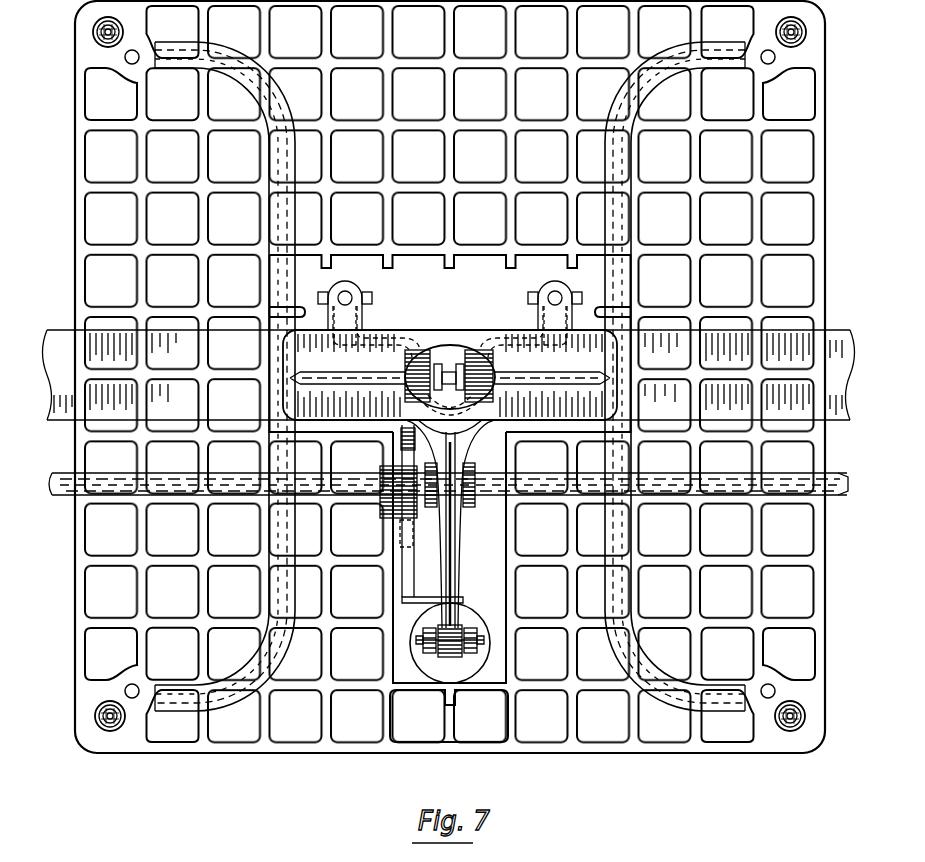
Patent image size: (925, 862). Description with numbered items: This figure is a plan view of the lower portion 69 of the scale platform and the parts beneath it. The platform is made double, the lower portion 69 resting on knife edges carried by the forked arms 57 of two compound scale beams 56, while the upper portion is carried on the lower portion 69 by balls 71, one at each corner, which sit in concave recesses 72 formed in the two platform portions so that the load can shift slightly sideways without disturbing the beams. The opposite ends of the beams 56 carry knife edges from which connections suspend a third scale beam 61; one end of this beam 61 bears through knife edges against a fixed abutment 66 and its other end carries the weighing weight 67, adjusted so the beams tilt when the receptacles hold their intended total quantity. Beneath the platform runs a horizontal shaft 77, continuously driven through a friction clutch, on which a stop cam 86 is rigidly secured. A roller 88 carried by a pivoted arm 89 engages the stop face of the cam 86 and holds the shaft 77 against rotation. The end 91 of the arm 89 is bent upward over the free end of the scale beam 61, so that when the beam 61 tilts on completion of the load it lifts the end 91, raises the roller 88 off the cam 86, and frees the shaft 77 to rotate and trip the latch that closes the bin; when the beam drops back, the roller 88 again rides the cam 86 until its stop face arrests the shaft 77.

The lower portion of the platform 69 is at (208, 750).
The concave recess 72 is at (97, 727).
The ball 71 is at (111, 722).
The arm 57 is at (276, 106).
The beam 56 is at (300, 367).
The fixed abutment 66 is at (528, 299).
The third scale beam 61 is at (461, 534).
The arm 89 is at (408, 559).
The end of the arm 91 is at (462, 602).
The roller 88 is at (410, 470).
The stop cam 86 is at (402, 512).
The horizontal shaft 77 is at (795, 488).
The weighing weight 67 is at (457, 668).